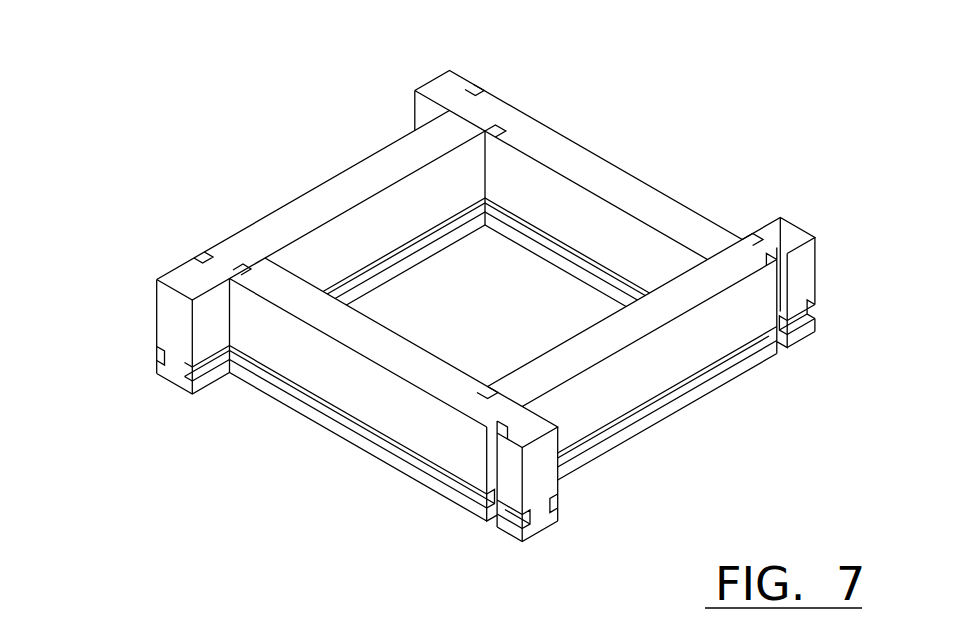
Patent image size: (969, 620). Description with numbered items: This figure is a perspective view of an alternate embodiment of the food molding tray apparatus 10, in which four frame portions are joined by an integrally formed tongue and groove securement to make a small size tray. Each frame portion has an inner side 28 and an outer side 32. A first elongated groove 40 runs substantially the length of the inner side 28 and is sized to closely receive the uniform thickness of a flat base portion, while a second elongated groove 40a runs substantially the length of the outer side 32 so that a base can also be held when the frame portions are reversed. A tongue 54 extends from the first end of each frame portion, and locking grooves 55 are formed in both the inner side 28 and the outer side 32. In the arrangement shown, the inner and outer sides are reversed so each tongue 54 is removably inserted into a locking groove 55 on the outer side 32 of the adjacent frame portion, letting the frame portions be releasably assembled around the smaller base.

The food molding tray apparatus 10 is at (643, 162).
The inner side 28 is at (396, 260).
The outer side 32 is at (147, 308).
The first elongated groove 40 is at (424, 117).
The second elongated groove 40a is at (155, 347).
The tongue 54 is at (481, 108).
The locking groove 55 is at (494, 110).